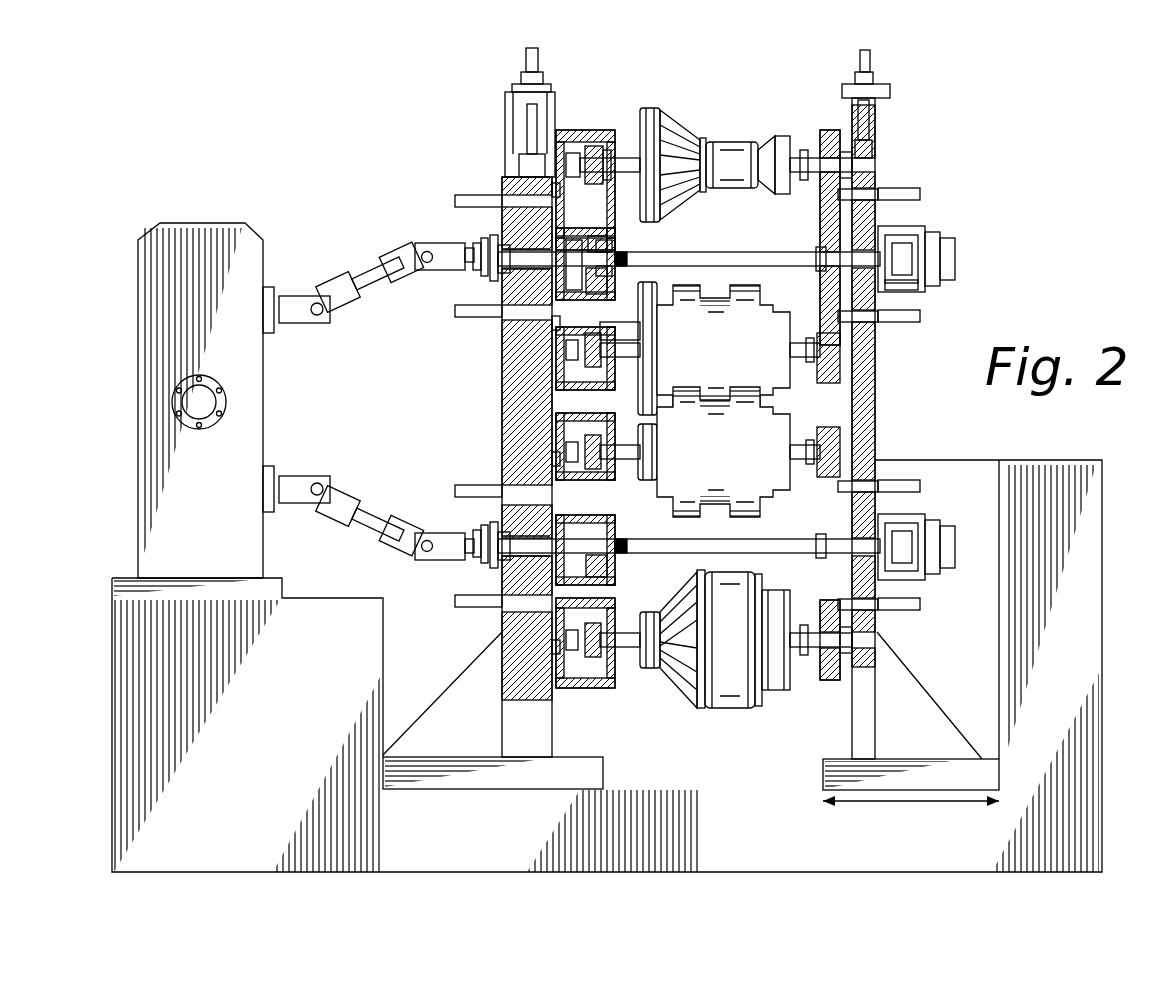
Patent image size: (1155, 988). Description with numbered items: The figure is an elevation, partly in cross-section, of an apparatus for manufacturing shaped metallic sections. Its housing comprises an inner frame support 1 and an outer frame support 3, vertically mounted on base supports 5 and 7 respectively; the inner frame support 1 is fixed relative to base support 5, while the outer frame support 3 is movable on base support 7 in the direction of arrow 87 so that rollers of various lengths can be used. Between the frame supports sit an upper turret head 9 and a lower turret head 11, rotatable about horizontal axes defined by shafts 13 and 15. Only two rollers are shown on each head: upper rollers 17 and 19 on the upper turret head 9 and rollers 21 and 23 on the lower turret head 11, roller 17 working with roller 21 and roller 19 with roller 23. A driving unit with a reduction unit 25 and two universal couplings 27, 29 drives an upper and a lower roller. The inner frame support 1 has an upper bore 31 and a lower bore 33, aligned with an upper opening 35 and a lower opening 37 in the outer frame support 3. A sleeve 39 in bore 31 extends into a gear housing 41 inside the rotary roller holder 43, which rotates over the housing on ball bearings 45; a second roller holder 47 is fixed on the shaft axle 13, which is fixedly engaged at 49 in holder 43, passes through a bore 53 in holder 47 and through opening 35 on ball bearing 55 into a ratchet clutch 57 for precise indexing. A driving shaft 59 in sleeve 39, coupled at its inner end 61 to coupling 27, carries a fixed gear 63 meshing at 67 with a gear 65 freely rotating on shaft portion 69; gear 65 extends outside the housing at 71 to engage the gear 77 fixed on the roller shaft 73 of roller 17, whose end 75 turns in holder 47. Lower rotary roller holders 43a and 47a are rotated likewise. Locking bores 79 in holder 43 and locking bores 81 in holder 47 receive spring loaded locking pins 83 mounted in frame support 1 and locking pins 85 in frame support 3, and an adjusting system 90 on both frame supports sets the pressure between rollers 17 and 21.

The inner frame support 1 is at (502, 615).
The outer frame support 3 is at (877, 634).
The base support 5 is at (586, 757).
The base support 7 is at (830, 760).
The upper turret head 9 is at (568, 116).
The lower turret head 11 is at (530, 428).
The shaft axle 13 is at (783, 252).
The shaft 15 is at (786, 539).
The upper roller 17 is at (652, 318).
The upper roller 19 is at (682, 128).
The lower roller 21 is at (665, 505).
The lower roller 23 is at (672, 605).
The reduction unit 25 is at (216, 223).
The universal coupling 27 is at (350, 272).
The universal coupling 29 is at (352, 528).
The upper bore 31 is at (560, 272).
The lower bore 33 is at (490, 557).
The upper opening 35 is at (905, 240).
The lower opening 37 is at (905, 530).
The sleeve 39 is at (475, 242).
The gear housing 41 is at (612, 246).
The rotary roller holder 43 is at (612, 132).
The lower rotary roller holder 43a is at (602, 680).
The ball bearings 45 is at (560, 300).
The roller holder 47 is at (826, 130).
The lower rotary roller holder 47a is at (828, 682).
The fixed engagement of shaft axle 49 is at (612, 266).
The bore 53 is at (816, 259).
The ball bearing 55 is at (905, 290).
The ratchet clutch 57 is at (958, 258).
The driving shaft 59 is at (494, 268).
The inner end of driving shaft 61 is at (484, 250).
The gear 63 is at (590, 148).
The gear 65 is at (607, 327).
The meshing point 67 is at (628, 262).
The shaft portion 69 is at (608, 286).
The exposed gear portion 71 is at (560, 342).
The roller shaft 73 is at (620, 362).
The roller shaft end 75 is at (832, 378).
The gear 77 is at (562, 366).
The locking bores 79 is at (552, 190).
The locking bores 81 is at (846, 196).
The spring loaded locking pins 83 is at (480, 195).
The locking pins 85 is at (898, 190).
The arrow 87 is at (935, 803).
The adjusting system 90 is at (523, 56).